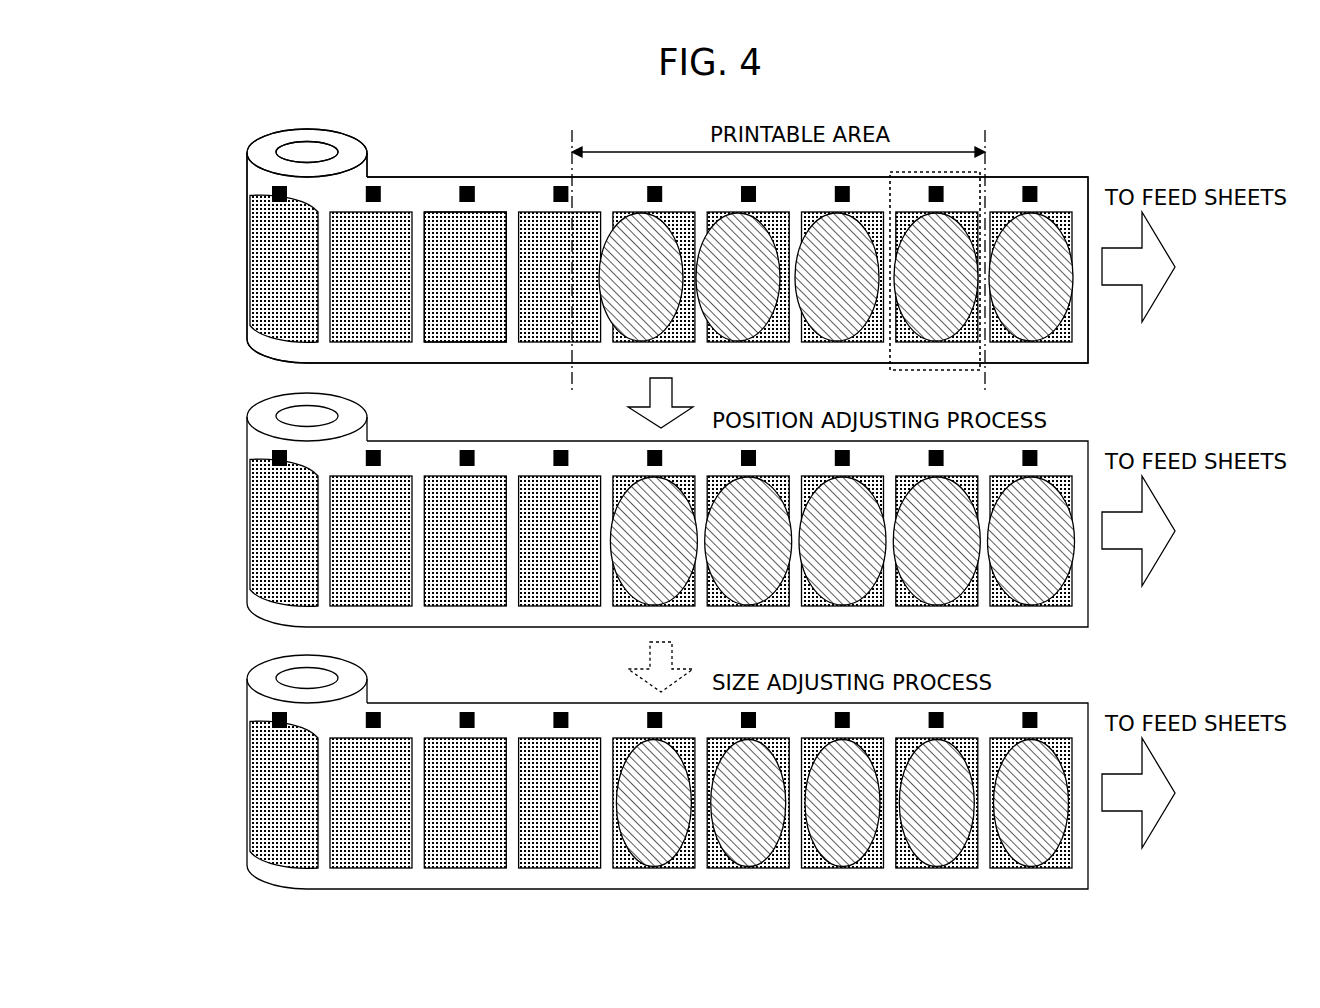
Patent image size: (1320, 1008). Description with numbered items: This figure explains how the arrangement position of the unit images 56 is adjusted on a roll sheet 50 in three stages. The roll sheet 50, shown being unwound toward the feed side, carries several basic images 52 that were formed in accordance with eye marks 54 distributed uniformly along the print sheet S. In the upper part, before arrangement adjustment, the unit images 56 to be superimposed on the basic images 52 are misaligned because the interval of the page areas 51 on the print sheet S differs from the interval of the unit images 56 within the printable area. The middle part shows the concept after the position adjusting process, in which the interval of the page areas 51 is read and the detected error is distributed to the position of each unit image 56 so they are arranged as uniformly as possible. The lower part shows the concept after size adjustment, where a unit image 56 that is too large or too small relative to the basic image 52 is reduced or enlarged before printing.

The roll sheet 50 is at (265, 137).
The basic image 52 is at (426, 212).
The eye mark 54 is at (466, 186).
The print sheet S is at (530, 177).
The page area 51 is at (985, 172).
The unit image 56 is at (1063, 215).